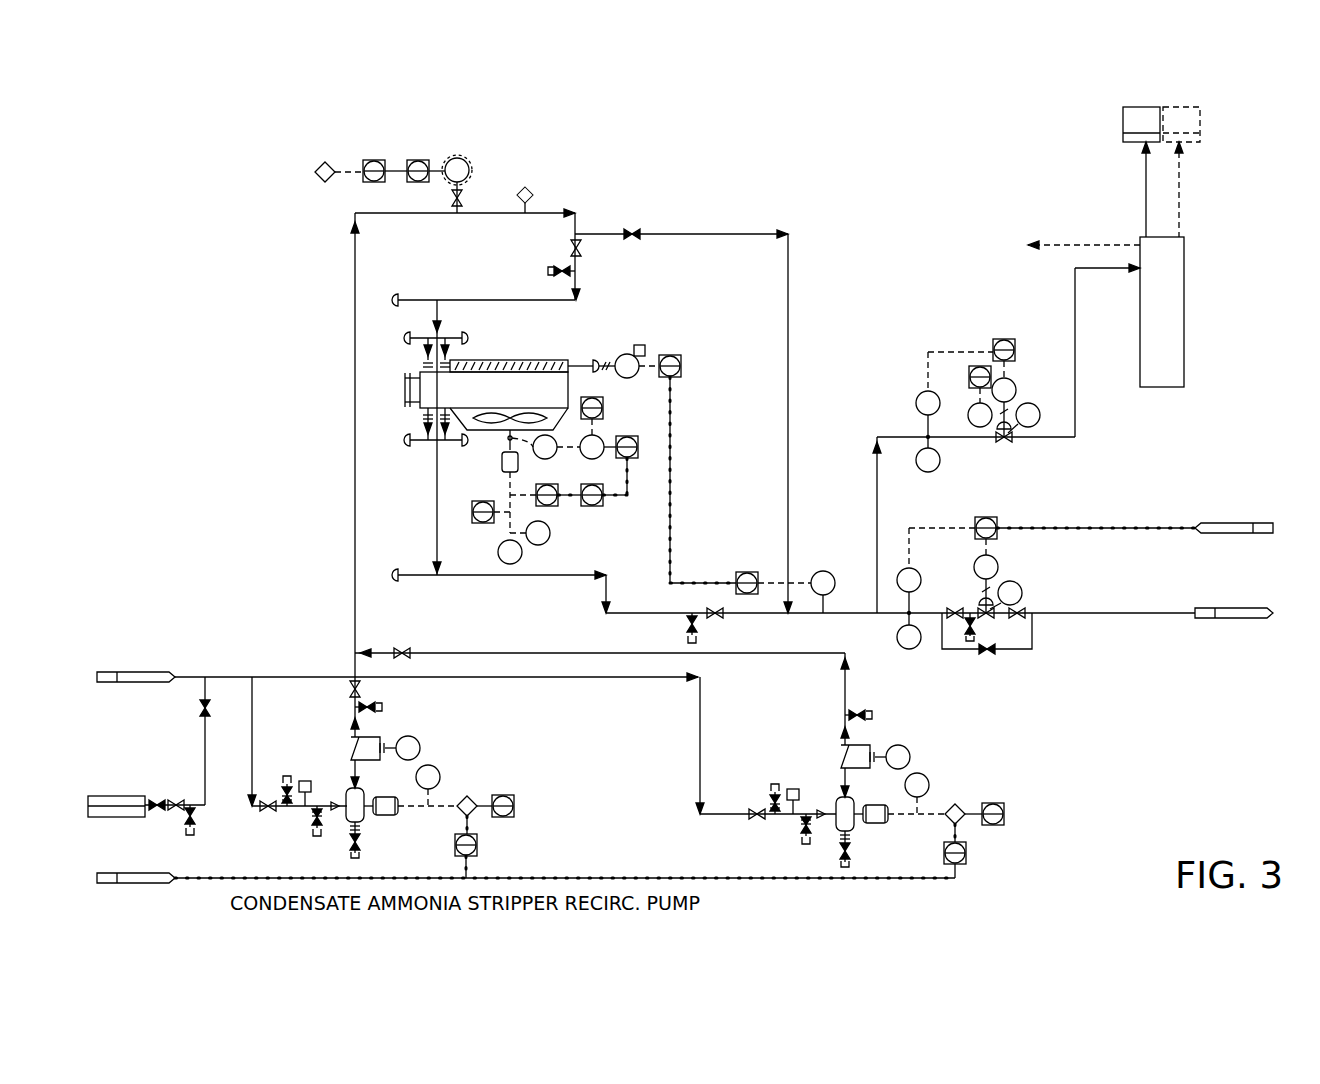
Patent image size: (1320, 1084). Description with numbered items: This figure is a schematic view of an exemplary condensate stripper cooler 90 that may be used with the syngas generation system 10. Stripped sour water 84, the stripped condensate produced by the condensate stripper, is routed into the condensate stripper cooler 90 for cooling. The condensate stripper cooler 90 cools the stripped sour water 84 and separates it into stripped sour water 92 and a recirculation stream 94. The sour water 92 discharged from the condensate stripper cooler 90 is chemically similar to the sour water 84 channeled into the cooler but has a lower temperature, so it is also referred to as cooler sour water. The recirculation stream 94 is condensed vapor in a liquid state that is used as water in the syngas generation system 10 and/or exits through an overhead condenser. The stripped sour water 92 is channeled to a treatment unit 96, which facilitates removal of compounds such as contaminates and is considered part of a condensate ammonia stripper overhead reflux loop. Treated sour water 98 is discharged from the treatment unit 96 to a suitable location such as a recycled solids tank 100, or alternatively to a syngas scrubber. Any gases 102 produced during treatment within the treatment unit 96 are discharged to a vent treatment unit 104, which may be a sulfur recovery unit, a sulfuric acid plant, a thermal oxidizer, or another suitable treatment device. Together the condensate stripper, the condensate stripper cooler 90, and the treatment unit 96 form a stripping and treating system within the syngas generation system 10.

The syngas generation system 10 is at (230, 138).
The stripped sour water 84 is at (193, 678).
The condensate stripper cooler 90 is at (758, 172).
The stripped sour water 92 is at (877, 482).
The recirculation stream 94 is at (1110, 613).
The treatment unit 96 is at (1176, 312).
The treated sour water 98 is at (1146, 160).
The recycled solids tank 100 is at (1141, 124).
The gases 102 is at (1182, 155).
The vent treatment unit 104 is at (1181, 124).